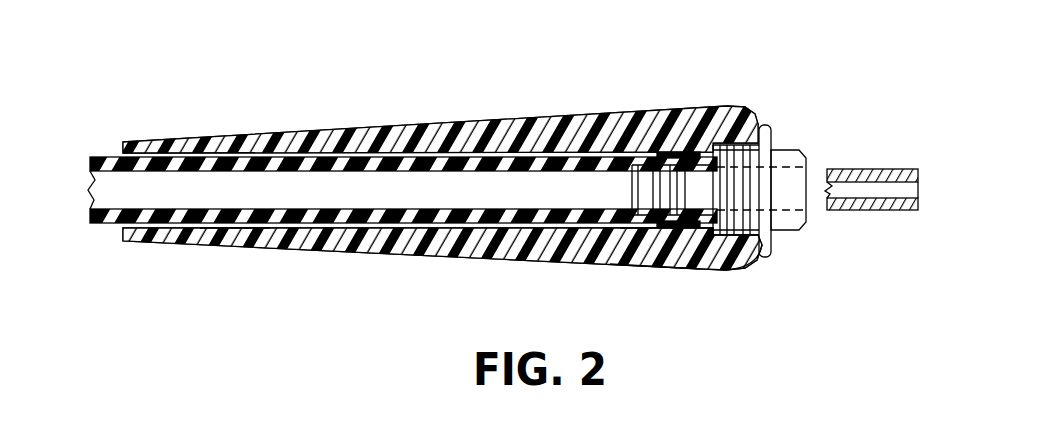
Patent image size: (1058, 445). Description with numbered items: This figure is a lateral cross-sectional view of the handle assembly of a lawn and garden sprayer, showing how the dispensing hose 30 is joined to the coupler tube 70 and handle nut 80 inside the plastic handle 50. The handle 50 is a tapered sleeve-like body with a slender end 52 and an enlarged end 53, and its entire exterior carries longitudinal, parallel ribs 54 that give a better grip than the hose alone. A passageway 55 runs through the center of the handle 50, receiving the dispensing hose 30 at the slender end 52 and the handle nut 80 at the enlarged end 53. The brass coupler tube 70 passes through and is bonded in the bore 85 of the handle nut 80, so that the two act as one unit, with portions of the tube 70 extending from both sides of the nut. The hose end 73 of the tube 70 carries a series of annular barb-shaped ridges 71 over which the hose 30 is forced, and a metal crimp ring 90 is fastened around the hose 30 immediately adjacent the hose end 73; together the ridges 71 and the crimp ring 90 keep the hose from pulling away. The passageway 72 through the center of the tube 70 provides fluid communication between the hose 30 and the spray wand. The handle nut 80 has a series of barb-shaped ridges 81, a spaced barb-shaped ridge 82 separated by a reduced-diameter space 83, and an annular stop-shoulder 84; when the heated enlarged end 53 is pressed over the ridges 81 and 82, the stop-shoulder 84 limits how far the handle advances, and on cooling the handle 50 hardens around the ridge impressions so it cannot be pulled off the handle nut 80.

The dispensing hose 30 is at (100, 217).
The handle 50 is at (420, 80).
The slender end 52 is at (163, 122).
The enlarged end 53 is at (641, 290).
The longitudinal parallel ribs 54 is at (441, 256).
The passageway 55 is at (232, 224).
The coupler tube 70 is at (848, 210).
The barb-shaped ridges 71 is at (632, 163).
The passageway 72 is at (873, 190).
The hose end 73 is at (657, 237).
The handle nut 80 is at (786, 130).
The barb-shaped ridges 81 is at (746, 258).
The barb-shaped ridge 82 is at (711, 145).
The space 83 is at (733, 135).
The annular stop-shoulder 84 is at (763, 242).
The bore 85 is at (790, 165).
The crimp ring 90 is at (661, 152).